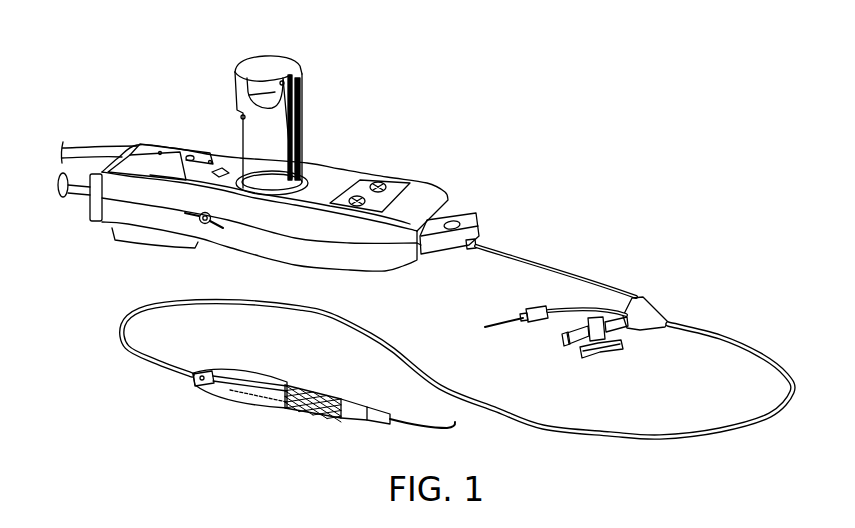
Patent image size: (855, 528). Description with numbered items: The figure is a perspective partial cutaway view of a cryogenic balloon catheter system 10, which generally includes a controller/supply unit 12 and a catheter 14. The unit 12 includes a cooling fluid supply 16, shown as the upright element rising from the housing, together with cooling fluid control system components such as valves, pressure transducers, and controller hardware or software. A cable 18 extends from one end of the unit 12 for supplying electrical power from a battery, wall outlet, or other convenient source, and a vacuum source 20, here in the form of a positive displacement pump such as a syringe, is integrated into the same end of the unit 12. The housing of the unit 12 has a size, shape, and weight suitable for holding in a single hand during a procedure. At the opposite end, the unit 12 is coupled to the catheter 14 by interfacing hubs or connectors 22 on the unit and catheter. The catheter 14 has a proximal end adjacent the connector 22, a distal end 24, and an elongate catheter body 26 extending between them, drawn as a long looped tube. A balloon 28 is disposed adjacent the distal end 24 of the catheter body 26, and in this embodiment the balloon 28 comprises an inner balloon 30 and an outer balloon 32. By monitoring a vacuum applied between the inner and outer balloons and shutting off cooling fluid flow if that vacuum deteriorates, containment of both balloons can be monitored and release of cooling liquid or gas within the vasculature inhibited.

The catheter system 10 is at (556, 46).
The controller/supply unit 12 is at (419, 161).
The catheter 14 is at (764, 332).
The cooling fluid supply 16 is at (313, 84).
The cable 18 is at (100, 147).
The vacuum source 20 is at (79, 196).
The connectors 22 is at (435, 252).
The distal end 24 is at (190, 380).
The catheter body 26 is at (682, 440).
The balloon 28 is at (287, 407).
The inner balloon 30 is at (250, 373).
The outer balloon 32 is at (224, 366).